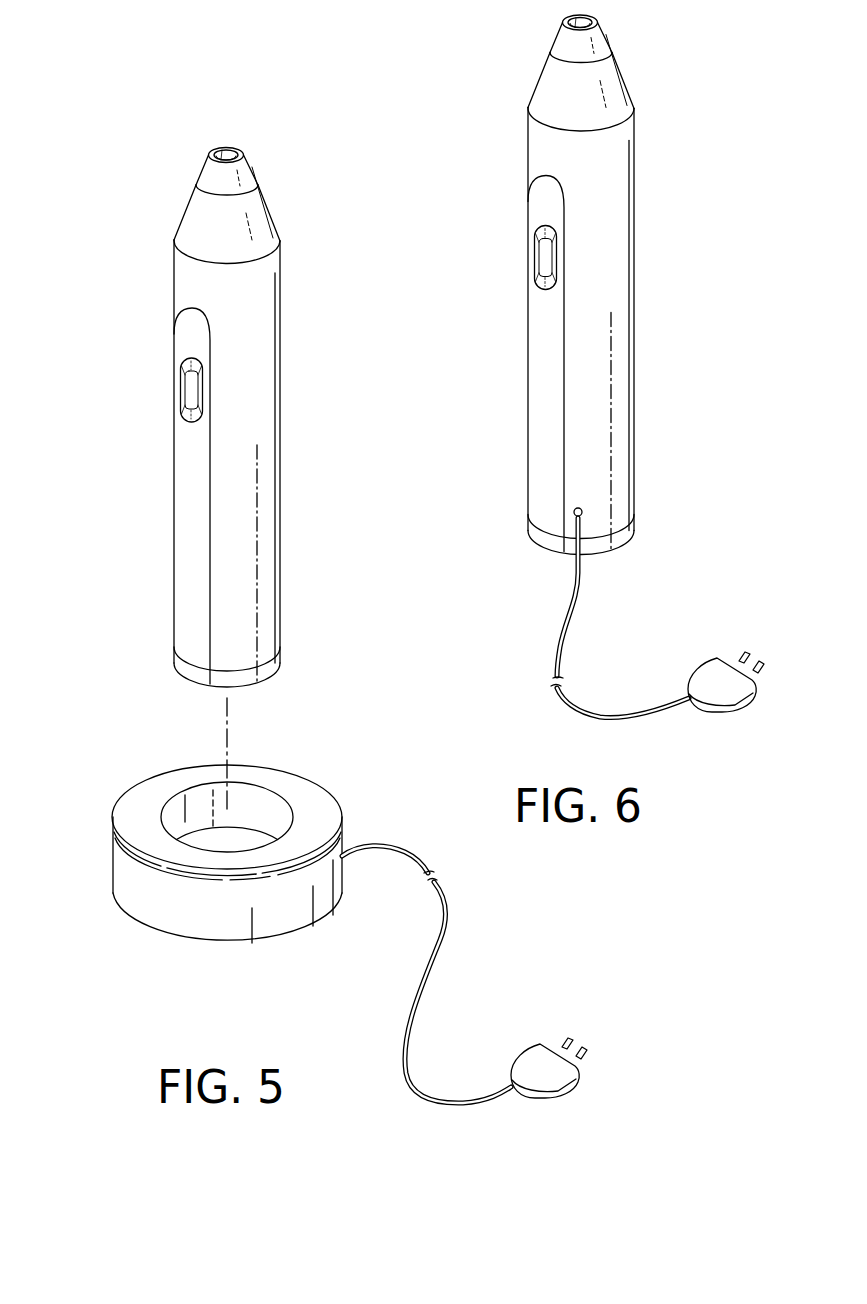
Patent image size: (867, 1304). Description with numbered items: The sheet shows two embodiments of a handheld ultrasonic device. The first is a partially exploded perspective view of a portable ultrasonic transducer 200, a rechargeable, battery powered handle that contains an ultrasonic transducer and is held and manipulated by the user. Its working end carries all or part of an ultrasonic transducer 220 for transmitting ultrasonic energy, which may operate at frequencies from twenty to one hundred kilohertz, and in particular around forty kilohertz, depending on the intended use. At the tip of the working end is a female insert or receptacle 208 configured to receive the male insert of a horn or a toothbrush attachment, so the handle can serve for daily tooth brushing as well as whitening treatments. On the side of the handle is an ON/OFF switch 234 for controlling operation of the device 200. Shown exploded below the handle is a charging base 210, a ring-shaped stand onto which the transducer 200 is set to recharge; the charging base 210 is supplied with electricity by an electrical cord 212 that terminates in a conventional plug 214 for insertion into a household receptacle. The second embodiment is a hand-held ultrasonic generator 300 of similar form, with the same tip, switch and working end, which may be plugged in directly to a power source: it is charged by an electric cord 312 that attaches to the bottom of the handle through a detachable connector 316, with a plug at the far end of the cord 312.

In FIG. 5, the portable ultrasonic transducer 200 is at (206, 359).
In FIG. 5, the female insert or receptacle 208 is at (231, 148).
In FIG. 5, the ultrasonic transducer 220 is at (260, 229).
In FIG. 5, the ON/OFF switch 234 is at (187, 390).
In FIG. 5, the charging base 210 is at (130, 778).
In FIG. 5, the electrical cord 212 is at (443, 935).
In FIG. 5, the plug 214 is at (557, 1083).
In FIG. 6, the hand-held ultrasonic generator 300 is at (663, 279).
In FIG. 6, the detachable connector 316 is at (582, 509).
In FIG. 6, the electric cord 312 is at (578, 603).